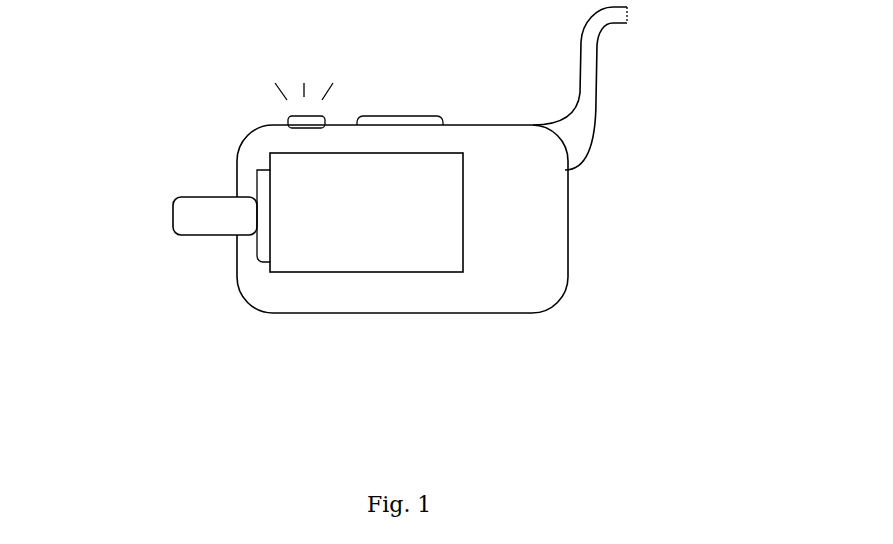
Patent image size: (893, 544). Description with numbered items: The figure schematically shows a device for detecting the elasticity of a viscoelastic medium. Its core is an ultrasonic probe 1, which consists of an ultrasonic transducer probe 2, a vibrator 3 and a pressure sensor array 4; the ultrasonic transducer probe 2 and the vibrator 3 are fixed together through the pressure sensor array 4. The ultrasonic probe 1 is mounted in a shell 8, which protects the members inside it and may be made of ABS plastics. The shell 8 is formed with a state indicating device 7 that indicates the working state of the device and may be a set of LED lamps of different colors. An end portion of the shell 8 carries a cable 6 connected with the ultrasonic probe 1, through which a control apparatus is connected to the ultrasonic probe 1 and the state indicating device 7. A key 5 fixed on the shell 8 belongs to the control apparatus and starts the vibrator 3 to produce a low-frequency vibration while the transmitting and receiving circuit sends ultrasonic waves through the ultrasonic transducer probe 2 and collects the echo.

The ultrasonic probe 1 is at (244, 335).
The ultrasonic transducer probe 2 is at (203, 218).
The vibrator 3 is at (374, 260).
The pressure sensor array 4 is at (265, 245).
The key 5 is at (395, 122).
The cable 6 is at (580, 130).
The state indicating device 7 is at (305, 122).
The shell 8 is at (568, 260).